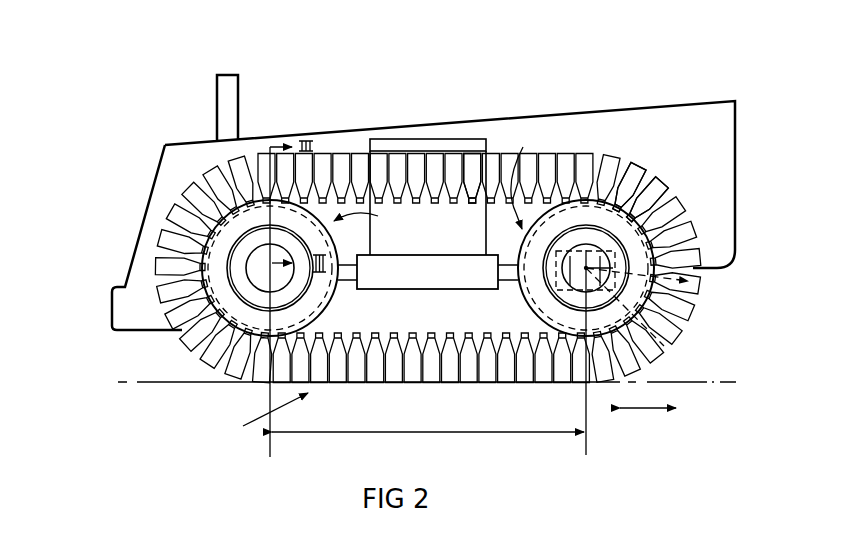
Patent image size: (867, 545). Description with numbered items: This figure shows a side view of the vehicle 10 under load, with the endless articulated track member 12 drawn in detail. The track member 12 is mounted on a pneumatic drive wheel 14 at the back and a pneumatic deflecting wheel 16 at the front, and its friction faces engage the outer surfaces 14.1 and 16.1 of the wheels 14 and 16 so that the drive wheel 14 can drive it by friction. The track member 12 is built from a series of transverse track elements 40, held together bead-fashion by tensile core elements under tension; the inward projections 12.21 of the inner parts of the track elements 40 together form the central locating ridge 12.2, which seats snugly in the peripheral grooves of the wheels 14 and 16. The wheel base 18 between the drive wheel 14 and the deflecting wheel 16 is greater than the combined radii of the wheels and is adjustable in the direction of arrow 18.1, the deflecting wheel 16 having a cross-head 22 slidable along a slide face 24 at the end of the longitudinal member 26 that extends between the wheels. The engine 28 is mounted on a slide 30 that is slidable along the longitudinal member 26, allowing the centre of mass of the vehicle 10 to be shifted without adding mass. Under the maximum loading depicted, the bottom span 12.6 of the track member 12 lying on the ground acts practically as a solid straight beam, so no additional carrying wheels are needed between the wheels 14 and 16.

The vehicle 10 is at (648, 55).
The endless articulated track member 12 is at (566, 138).
The central locating ridge 12.2 is at (420, 334).
The inward projection 12.21 is at (470, 230).
The bottom span 12.6 is at (249, 420).
The pneumatic drive wheel 14 is at (340, 302).
The outer surface of drive wheel 14.1 is at (377, 225).
The pneumatic deflecting wheel 16 is at (524, 313).
The outer surface of deflecting wheel 16.1 is at (526, 177).
The wheel base 18 is at (478, 422).
The direction of wheel base adjustment 18.1 is at (652, 410).
The cross-head 22 is at (654, 285).
The slide face 24 is at (639, 319).
The longitudinal member 26 is at (510, 273).
The engine 28 is at (408, 147).
The slide 30 is at (417, 262).
The transverse track element 40 is at (627, 178).